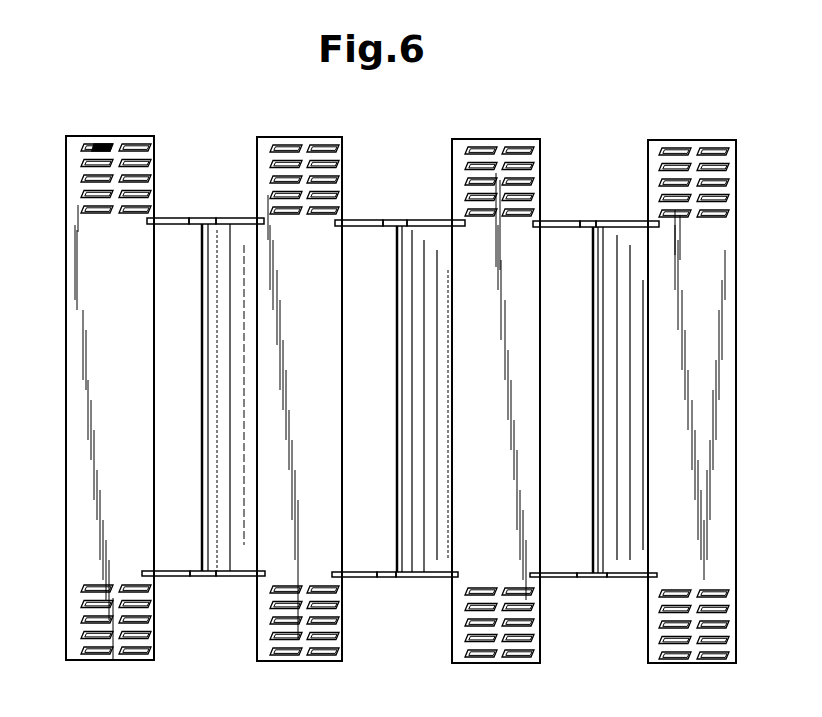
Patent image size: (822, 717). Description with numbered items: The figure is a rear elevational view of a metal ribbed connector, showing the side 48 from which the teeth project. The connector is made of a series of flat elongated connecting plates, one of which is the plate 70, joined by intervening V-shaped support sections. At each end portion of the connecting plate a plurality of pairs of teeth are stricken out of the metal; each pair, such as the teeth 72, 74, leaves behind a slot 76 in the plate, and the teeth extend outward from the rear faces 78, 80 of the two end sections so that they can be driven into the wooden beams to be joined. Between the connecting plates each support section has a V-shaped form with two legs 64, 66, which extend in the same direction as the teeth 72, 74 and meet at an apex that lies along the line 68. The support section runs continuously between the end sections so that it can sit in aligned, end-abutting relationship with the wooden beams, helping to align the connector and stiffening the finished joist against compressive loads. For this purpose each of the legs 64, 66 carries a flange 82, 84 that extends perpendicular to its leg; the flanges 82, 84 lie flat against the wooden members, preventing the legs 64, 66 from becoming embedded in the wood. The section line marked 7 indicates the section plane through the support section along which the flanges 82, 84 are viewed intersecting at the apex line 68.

The rear side 48 is at (228, 147).
The leg 64 is at (188, 380).
The leg 66 is at (241, 380).
The apex line 68 is at (201, 296).
The plate 70 is at (121, 331).
The tooth 72 is at (96, 141).
The tooth 74 is at (118, 143).
The slot 76 is at (103, 143).
The rear face 78 is at (76, 180).
The rear face 80 is at (74, 607).
The flange 82 is at (186, 218).
The flange 84 is at (237, 218).
The section line 7- 7 is at (55, 113).